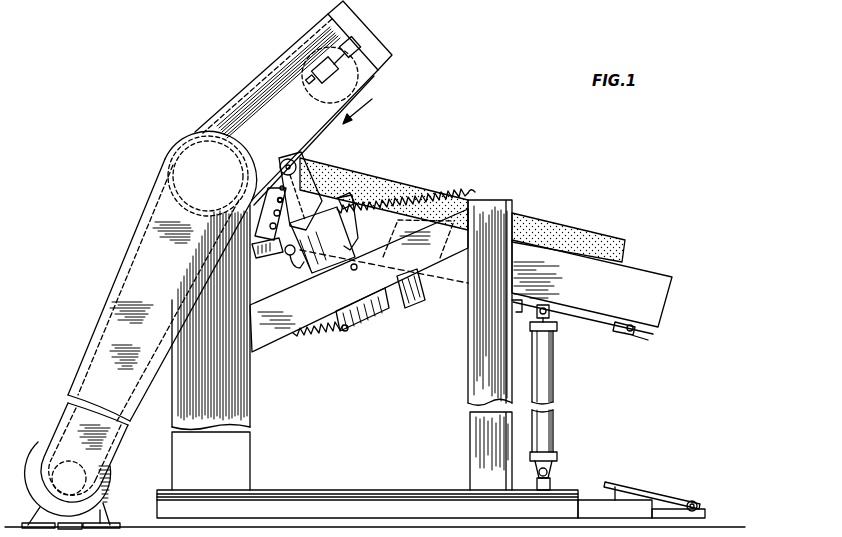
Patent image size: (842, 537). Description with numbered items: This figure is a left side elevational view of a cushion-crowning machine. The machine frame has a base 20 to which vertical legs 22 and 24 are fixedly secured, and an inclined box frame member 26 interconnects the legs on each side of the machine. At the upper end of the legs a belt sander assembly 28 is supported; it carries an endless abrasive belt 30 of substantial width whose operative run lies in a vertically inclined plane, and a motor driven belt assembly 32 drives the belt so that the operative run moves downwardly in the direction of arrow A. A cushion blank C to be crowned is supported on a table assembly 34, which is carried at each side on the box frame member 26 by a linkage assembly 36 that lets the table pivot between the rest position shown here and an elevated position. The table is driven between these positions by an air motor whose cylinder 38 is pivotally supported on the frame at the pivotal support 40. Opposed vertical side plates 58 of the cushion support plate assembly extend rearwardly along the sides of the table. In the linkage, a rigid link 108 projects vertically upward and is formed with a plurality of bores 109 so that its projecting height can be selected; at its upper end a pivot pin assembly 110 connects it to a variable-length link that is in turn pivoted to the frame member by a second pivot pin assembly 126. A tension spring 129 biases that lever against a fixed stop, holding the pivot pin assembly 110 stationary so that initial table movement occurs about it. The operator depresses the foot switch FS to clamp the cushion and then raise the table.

The base 20 is at (372, 489).
The vertical leg 22 is at (240, 402).
The vertical leg 24 is at (478, 380).
The inclined box frame member 26 is at (385, 283).
The belt sander assembly 28 is at (224, 92).
The endless abrasive belt 30 is at (317, 129).
The motor driven belt assembly 32 is at (57, 398).
The table assembly 34 is at (538, 258).
The linkage assembly 36 is at (310, 200).
The cylinder 38 is at (546, 429).
The pivotal support 40 is at (551, 476).
The vertical side plate 58 is at (651, 292).
The rigid link 108 is at (280, 188).
The bores 109 is at (278, 200).
The pivot pin assembly 110 is at (284, 160).
The second pivot pin assembly 126 is at (353, 270).
The tension spring 129 is at (400, 197).
The arrow A is at (363, 103).
The cushion blank C is at (598, 240).
The foot switch FS is at (630, 483).